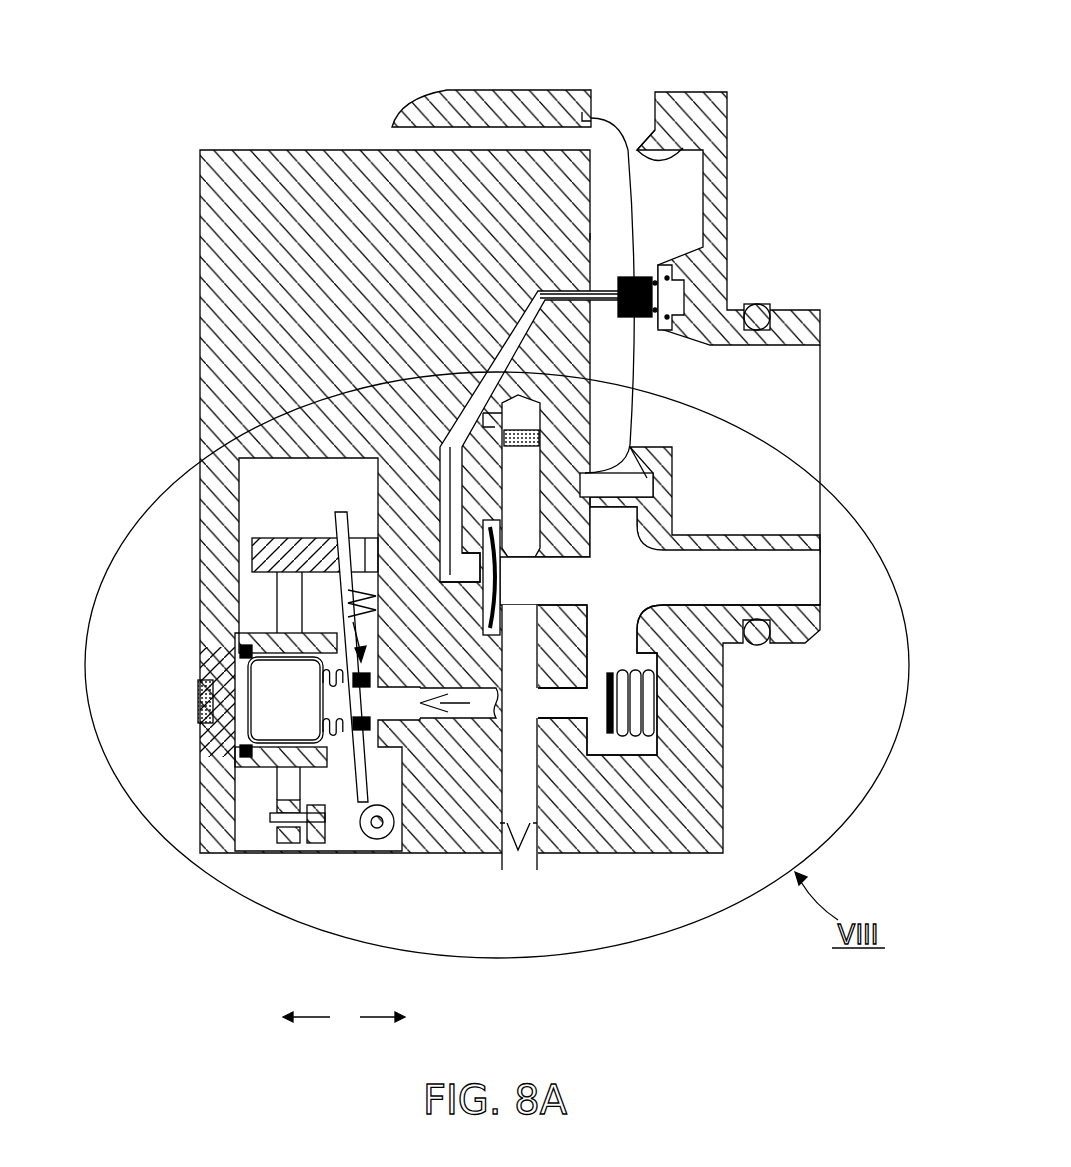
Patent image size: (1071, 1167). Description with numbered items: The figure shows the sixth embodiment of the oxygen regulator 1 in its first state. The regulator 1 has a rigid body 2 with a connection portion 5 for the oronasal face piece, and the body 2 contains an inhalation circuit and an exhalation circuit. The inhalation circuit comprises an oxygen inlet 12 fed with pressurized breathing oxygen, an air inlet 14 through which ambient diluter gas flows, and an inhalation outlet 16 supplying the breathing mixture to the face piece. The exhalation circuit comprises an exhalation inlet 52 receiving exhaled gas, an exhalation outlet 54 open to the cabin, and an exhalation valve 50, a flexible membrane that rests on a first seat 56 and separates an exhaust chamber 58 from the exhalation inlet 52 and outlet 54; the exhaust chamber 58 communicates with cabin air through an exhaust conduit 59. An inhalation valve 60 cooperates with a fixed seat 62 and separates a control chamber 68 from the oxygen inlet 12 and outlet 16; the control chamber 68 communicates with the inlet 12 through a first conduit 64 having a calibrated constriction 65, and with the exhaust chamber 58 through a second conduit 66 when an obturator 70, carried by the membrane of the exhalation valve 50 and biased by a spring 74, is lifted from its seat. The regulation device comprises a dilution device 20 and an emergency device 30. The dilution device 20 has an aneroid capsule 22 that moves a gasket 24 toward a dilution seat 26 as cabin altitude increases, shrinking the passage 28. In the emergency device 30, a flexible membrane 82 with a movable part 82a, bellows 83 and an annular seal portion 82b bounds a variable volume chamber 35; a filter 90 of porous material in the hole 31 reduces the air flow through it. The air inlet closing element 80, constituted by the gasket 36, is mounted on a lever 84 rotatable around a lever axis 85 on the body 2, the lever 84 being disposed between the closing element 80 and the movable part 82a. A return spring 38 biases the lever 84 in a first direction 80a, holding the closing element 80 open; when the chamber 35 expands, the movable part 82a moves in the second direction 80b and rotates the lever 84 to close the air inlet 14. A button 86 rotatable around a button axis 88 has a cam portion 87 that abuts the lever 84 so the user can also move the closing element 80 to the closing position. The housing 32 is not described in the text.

The regulator 1 is at (140, 1010).
The rigid body 2 is at (232, 183).
The connection portion 5 is at (757, 662).
The oxygen inlet 12 is at (517, 875).
The air inlet 14 is at (466, 705).
The inhalation outlet 16 is at (802, 575).
The dilution device 20 is at (627, 782).
The aneroid capsule 22 is at (650, 705).
The gasket 24 is at (597, 744).
The dilution seat 26 is at (575, 720).
The passage 28 is at (587, 760).
The emergency device 30 is at (445, 722).
The hole 31 is at (262, 713).
The actuator housing 32 is at (275, 640).
The variable volume chamber 35 is at (215, 742).
The gasket 36 is at (402, 752).
The return spring 38 is at (373, 617).
The exhalation valve 50 is at (637, 202).
The exhalation inlet 52 is at (800, 375).
The exhalation outlet 54 is at (627, 100).
The first seat 56 is at (650, 135).
The exhaust chamber 58 is at (585, 233).
The exhaust conduit 59 is at (467, 138).
The inhalation valve 60 is at (485, 598).
The fixed seat 62 is at (480, 552).
The first conduit 64 is at (457, 412).
The calibrated constriction 65 is at (440, 445).
The second conduit 66 is at (497, 357).
The control chamber 68 is at (478, 580).
The obturator 70 is at (640, 277).
The spring 74 is at (700, 298).
The air inlet closing element 80 is at (352, 622).
The first direction 80a is at (305, 1031).
The second direction 80b is at (380, 1031).
The flexible membrane 82 is at (262, 768).
The movable part 82a is at (366, 690).
The annular seal portion 82b is at (242, 652).
The bellows 83 is at (362, 728).
The lever 84 is at (340, 517).
The lever axis 85 is at (377, 840).
The button 86 is at (258, 550).
The cam portion 87 is at (355, 550).
The button axis 88 is at (293, 822).
The filter 90 is at (205, 700).